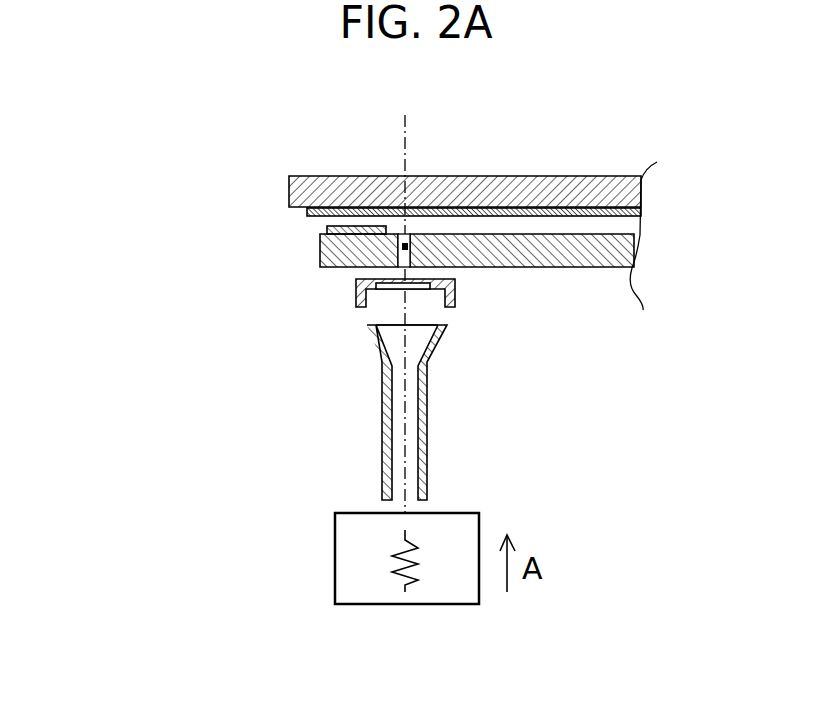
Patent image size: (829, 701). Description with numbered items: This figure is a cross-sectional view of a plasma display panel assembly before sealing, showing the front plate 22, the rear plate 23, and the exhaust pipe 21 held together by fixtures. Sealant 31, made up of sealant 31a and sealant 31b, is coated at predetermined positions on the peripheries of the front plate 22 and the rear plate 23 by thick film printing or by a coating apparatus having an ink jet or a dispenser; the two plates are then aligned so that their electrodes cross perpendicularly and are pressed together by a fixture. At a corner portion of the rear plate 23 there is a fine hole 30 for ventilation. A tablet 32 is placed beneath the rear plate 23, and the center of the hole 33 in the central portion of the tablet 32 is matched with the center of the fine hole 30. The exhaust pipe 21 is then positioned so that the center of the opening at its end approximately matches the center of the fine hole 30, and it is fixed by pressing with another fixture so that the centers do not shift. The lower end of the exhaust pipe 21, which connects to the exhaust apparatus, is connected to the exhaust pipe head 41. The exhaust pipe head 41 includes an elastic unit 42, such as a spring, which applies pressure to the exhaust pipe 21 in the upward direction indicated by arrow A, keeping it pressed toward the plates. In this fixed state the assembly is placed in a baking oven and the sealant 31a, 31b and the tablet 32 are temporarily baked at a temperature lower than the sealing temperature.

The exhaust pipe 21 is at (427, 422).
The front plate 22 is at (552, 188).
The rear plate 23 is at (570, 250).
The fine hole for ventilation 30 is at (400, 250).
The sealant 31 is at (376, 240).
The sealant 31a is at (320, 233).
The sealant 31b is at (307, 212).
The tablet 32 is at (355, 297).
The hole 33 is at (398, 284).
The exhaust pipe head 41 is at (335, 532).
The elastic unit 42 is at (389, 570).